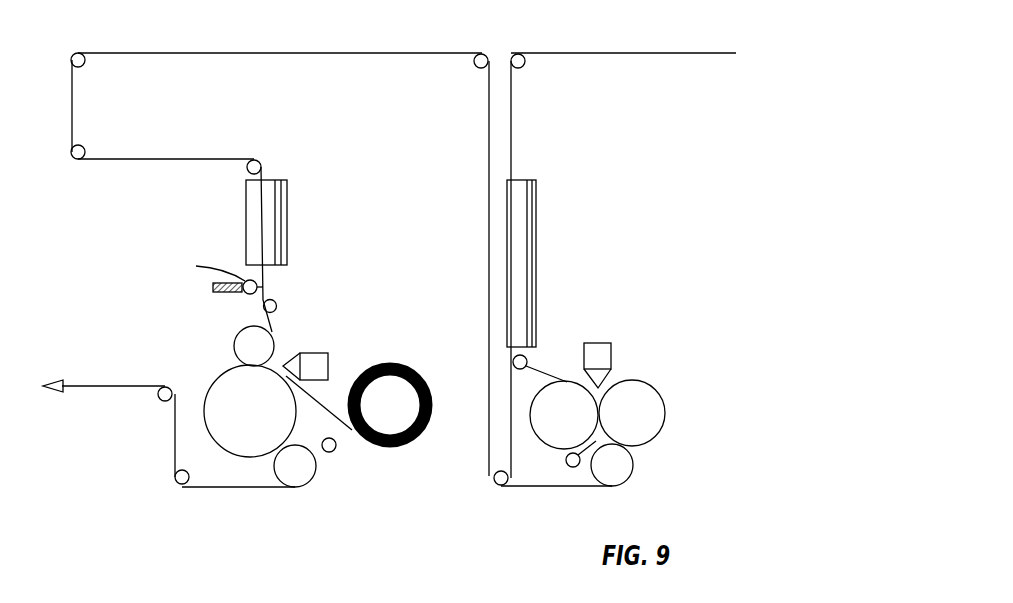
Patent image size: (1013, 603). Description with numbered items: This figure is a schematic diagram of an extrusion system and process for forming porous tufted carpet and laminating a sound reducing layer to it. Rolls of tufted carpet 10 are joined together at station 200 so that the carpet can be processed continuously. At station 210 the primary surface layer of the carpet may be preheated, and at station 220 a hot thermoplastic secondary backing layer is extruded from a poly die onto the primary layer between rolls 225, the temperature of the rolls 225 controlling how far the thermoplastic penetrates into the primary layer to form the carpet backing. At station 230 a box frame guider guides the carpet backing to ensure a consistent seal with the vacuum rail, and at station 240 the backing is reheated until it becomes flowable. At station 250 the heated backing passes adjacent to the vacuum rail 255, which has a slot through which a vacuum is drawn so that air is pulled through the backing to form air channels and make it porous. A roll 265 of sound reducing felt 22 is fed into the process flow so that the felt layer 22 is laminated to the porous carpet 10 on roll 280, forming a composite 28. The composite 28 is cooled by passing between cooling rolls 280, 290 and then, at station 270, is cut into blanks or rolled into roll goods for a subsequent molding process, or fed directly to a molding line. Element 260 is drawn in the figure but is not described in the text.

The joining of carpet rolls 200 is at (630, 50).
The box frame guider 230 is at (232, 126).
The carpet backing heating station 240 is at (320, 237).
The tufted carpet 10 is at (275, 321).
The vacuum rail station 250 is at (185, 290).
The vacuum rail 255 is at (233, 297).
The applicator pointer 260 is at (294, 333).
The cooling roll 290 is at (267, 356).
The roll 280 is at (271, 422).
The sound reducing layer 22 is at (343, 431).
The post-processing operations 270 is at (107, 408).
The composite 28 is at (208, 491).
The roll of sound reducing felt 265 is at (418, 446).
The primary layer heating station 210 is at (566, 236).
The extrusion station 220 is at (626, 350).
The rolls 225 is at (665, 400).